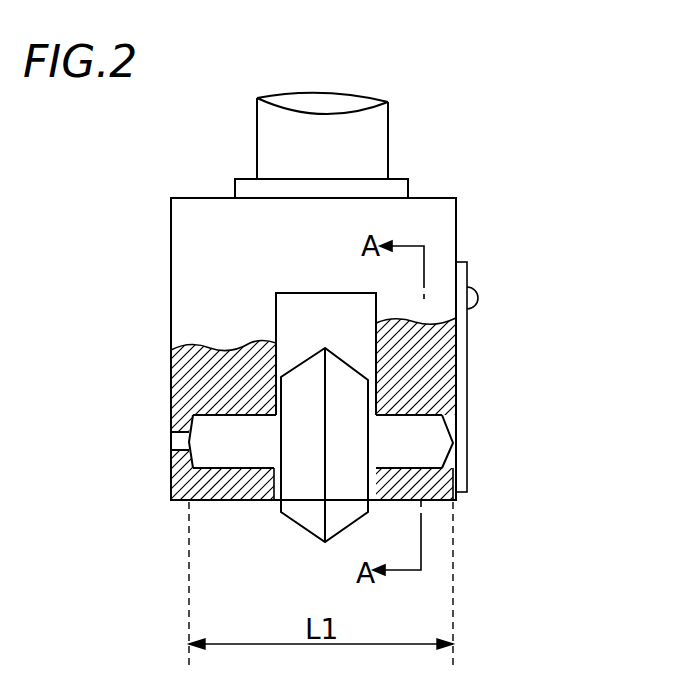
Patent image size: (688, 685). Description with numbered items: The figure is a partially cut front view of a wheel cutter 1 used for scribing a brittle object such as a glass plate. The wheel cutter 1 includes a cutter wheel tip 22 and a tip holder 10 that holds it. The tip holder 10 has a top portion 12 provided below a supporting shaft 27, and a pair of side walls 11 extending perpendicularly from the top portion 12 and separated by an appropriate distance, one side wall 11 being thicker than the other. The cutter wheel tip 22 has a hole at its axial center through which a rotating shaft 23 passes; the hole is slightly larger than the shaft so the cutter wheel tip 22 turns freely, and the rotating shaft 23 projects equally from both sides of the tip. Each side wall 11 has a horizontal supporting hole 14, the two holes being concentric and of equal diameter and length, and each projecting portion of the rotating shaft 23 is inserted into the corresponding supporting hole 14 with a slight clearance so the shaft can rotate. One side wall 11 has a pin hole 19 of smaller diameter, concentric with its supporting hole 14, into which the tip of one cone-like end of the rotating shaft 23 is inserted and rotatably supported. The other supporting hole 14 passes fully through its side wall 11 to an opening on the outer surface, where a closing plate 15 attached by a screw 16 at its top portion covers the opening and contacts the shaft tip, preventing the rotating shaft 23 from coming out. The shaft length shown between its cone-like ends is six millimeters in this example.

The wheel cutter 1 is at (332, 343).
The tip holder 10 is at (462, 218).
The side wall 11 is at (462, 345).
The top portion 12 is at (202, 208).
The supporting hole 14 is at (232, 412).
The closing plate 15 is at (468, 381).
The screw 16 is at (478, 300).
The pin hole 19 is at (170, 440).
The cutter wheel tip 22 is at (300, 527).
The rotating shaft 23 is at (223, 456).
The supporting shaft 27 is at (388, 134).